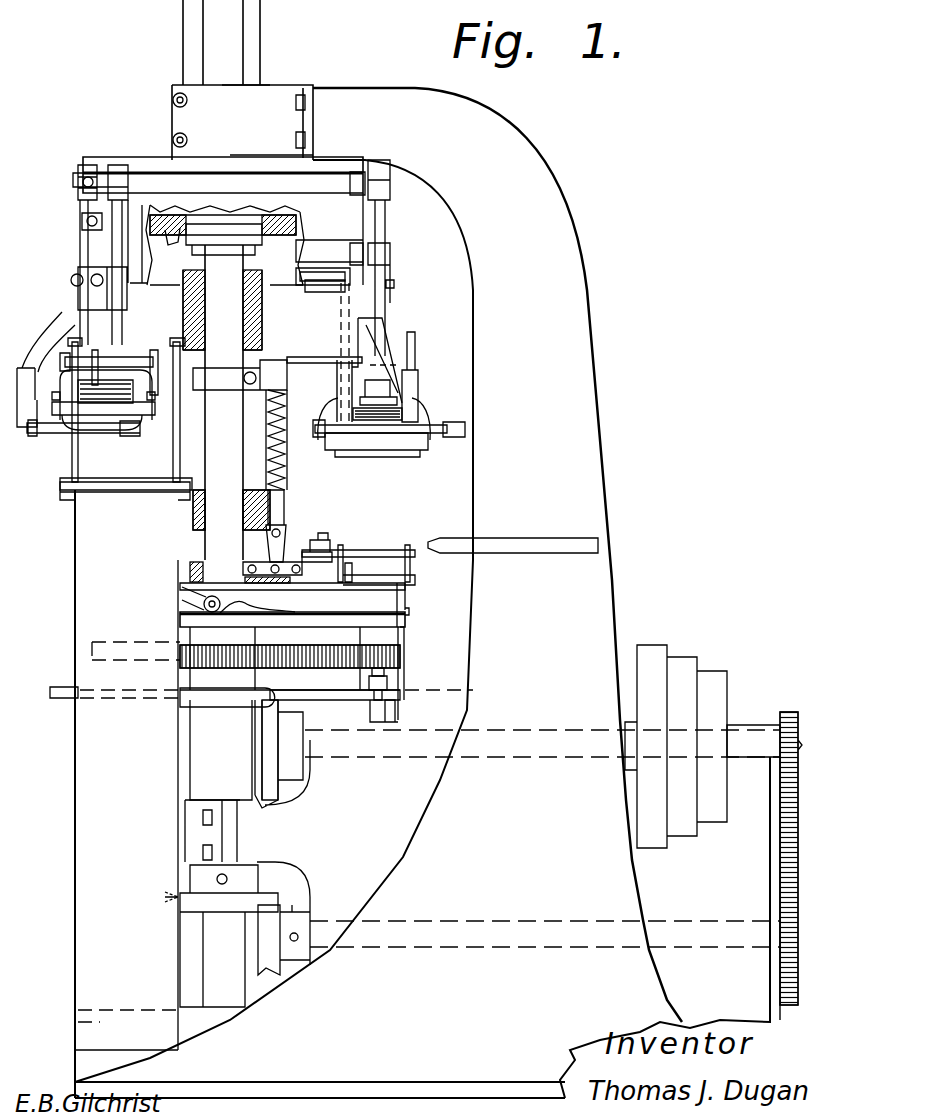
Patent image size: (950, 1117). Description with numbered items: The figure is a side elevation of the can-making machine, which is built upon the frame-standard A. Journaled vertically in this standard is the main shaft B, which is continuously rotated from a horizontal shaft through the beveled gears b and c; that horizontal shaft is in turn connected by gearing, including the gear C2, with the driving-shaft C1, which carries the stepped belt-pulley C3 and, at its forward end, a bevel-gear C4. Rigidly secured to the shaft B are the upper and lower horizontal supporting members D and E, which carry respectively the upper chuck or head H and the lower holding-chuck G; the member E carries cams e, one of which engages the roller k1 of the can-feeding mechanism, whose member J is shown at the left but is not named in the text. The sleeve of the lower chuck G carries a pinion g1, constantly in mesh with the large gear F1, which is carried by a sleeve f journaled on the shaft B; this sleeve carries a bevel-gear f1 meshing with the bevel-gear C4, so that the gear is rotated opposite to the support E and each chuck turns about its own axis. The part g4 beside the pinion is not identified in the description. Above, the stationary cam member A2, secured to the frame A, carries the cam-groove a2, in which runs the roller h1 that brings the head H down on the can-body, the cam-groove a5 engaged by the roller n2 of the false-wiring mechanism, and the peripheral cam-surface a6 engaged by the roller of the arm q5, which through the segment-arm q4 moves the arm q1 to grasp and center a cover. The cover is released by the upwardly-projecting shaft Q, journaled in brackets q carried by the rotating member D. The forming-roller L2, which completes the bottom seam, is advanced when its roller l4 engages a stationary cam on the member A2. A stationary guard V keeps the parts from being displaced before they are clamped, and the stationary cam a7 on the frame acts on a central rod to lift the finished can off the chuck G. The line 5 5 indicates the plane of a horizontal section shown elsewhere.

The frame-standard A is at (415, 549).
The stationary cam member A2 is at (246, 245).
The cam-groove a2 is at (329, 239).
The cam-groove a5 is at (223, 177).
The peripheral cam-surface a6 is at (335, 275).
The stationary cam a7 is at (400, 705).
The main shaft B is at (236, 414).
The beveled gear b is at (230, 905).
The driving-shaft C1 is at (745, 735).
The gear C2 is at (786, 712).
The stepped belt-pulley C3 is at (676, 746).
The bevel-gear C4 is at (262, 768).
The beveled gear c is at (272, 968).
The upper supporting member D is at (299, 320).
The lower supporting member E is at (294, 605).
The cam e is at (262, 592).
The large gear F1 is at (292, 673).
The sleeve f is at (290, 704).
The bevel-gear f1 is at (212, 705).
The lower holding-chuck G is at (398, 555).
The pinion g1 is at (384, 672).
The nut g4 is at (388, 682).
The upper chuck H is at (408, 440).
The roller h1 is at (365, 252).
The feed mechanism J is at (108, 419).
The roller k1 is at (215, 597).
The forming-roller L2 is at (330, 558).
The roller l4 is at (180, 238).
The roller n2 is at (370, 180).
The upwardly-projecting shaft Q is at (367, 379).
The bracket q is at (46, 369).
The arm q1 is at (375, 355).
The segment-arm q4 is at (365, 433).
The arm q5 is at (318, 288).
The stationary guard V is at (513, 533).
The section line 5 is at (73, 257).